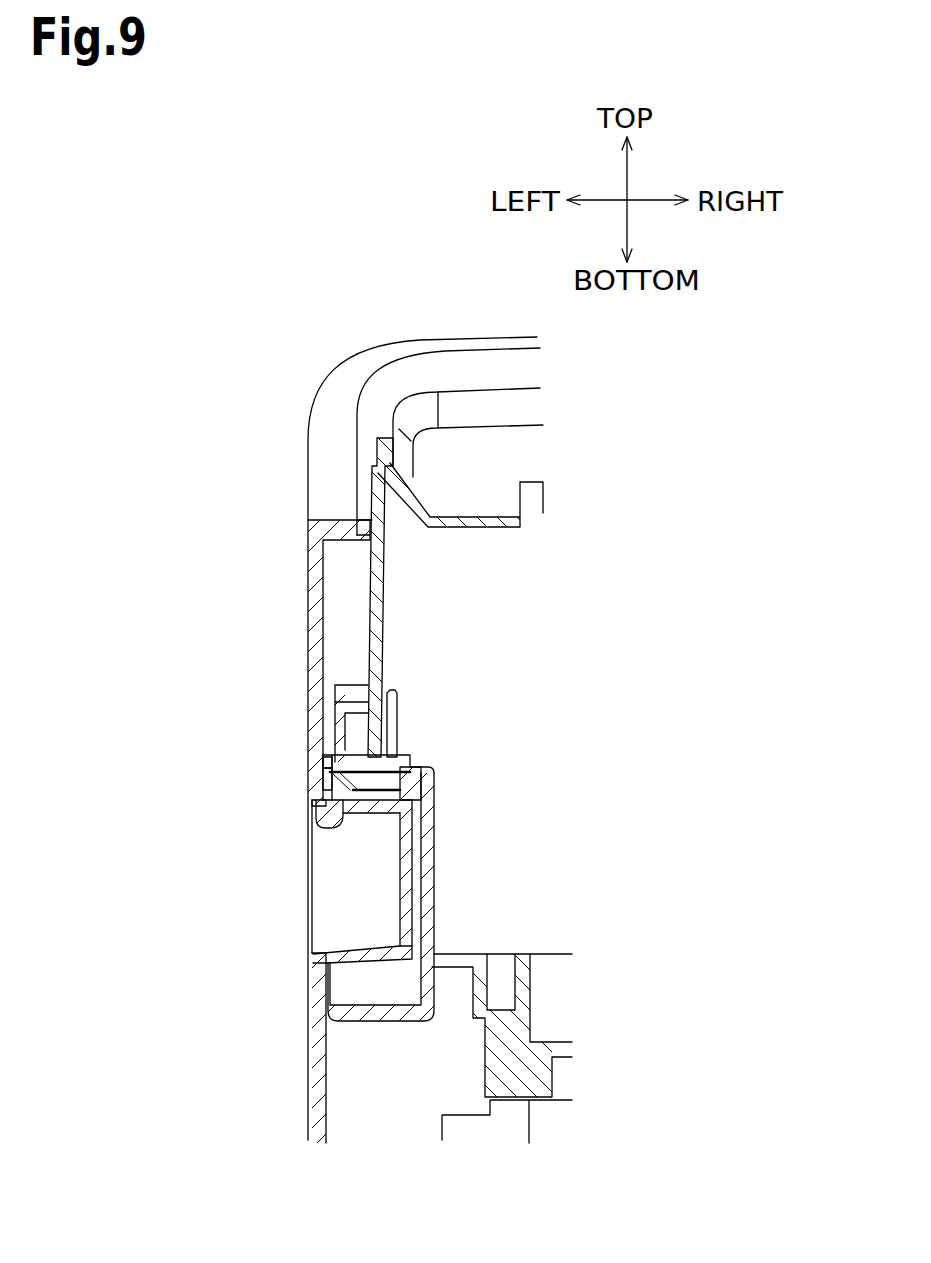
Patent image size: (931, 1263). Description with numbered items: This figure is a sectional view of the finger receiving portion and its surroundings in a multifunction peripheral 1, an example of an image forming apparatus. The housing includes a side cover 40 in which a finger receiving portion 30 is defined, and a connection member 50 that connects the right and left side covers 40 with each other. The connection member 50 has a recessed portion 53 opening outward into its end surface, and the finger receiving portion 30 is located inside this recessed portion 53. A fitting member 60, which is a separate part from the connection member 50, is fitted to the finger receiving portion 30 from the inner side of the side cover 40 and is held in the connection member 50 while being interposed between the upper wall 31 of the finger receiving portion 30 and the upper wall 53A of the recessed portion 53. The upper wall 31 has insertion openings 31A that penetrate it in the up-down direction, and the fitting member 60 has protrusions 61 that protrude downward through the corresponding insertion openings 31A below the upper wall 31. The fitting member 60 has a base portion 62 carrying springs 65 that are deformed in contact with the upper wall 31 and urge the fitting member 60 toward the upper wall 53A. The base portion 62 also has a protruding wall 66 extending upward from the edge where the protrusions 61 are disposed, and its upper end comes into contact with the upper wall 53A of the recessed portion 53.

The multifunction peripheral 1 is at (193, 362).
The finger receiving portion 30 is at (350, 915).
The upper wall 31 is at (333, 838).
The insertion openings 31A is at (313, 803).
The side cover 40 is at (302, 567).
The connection member 50 is at (522, 953).
The recessed portion 53 is at (358, 983).
The upper wall 53A is at (353, 750).
The fitting member 60 is at (310, 784).
The protrusions 61 is at (327, 820).
The base portion 62 is at (320, 765).
The springs 65 is at (412, 778).
The protruding wall 66 is at (318, 762).